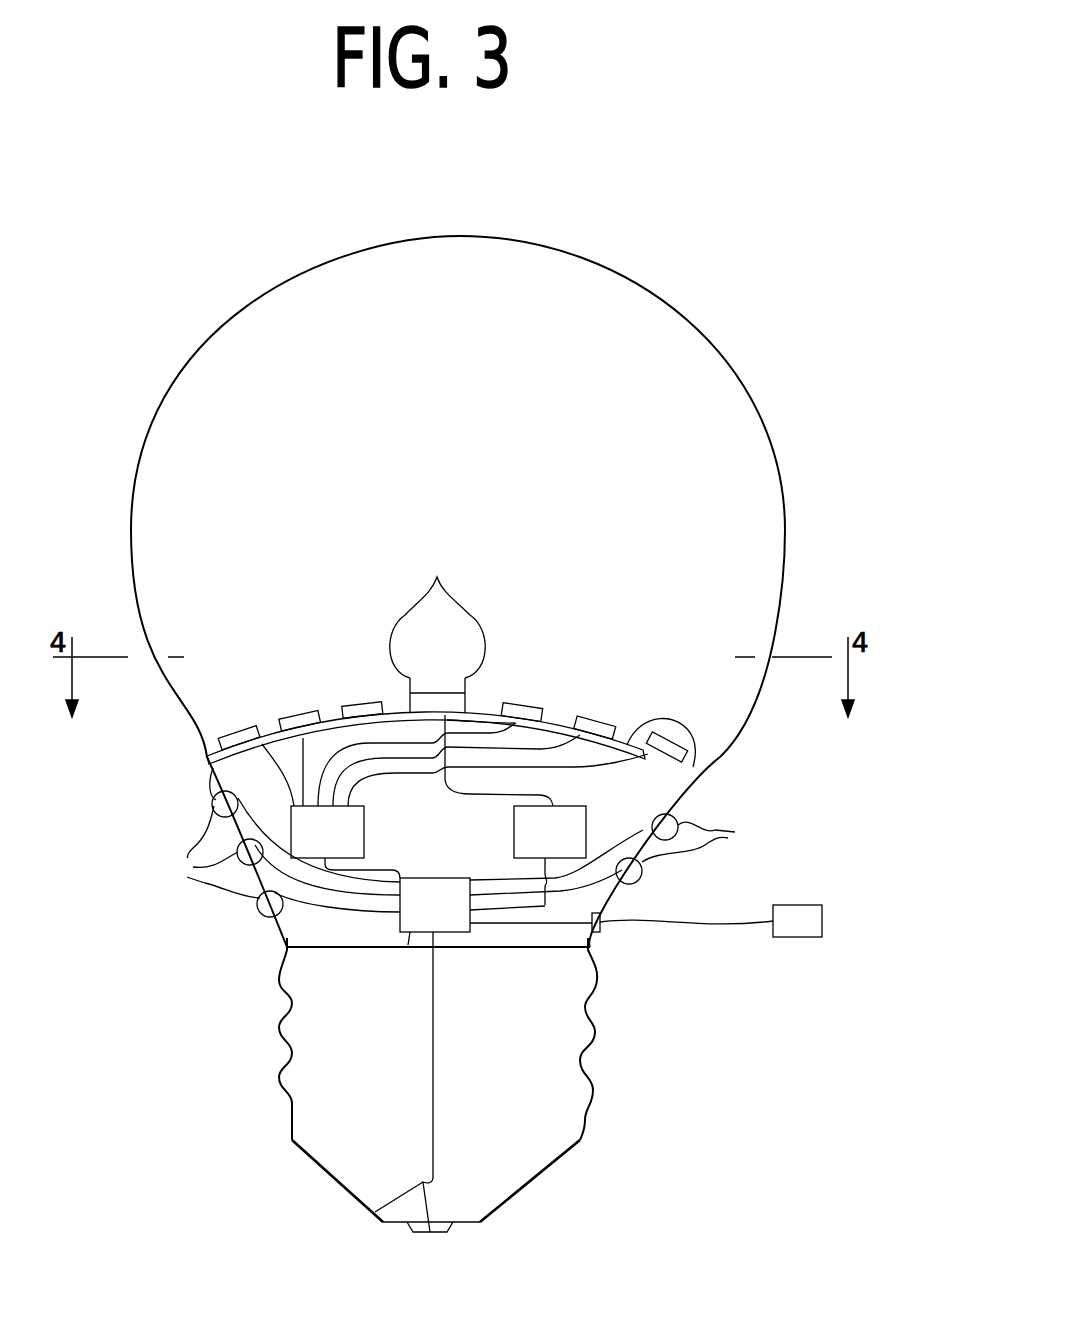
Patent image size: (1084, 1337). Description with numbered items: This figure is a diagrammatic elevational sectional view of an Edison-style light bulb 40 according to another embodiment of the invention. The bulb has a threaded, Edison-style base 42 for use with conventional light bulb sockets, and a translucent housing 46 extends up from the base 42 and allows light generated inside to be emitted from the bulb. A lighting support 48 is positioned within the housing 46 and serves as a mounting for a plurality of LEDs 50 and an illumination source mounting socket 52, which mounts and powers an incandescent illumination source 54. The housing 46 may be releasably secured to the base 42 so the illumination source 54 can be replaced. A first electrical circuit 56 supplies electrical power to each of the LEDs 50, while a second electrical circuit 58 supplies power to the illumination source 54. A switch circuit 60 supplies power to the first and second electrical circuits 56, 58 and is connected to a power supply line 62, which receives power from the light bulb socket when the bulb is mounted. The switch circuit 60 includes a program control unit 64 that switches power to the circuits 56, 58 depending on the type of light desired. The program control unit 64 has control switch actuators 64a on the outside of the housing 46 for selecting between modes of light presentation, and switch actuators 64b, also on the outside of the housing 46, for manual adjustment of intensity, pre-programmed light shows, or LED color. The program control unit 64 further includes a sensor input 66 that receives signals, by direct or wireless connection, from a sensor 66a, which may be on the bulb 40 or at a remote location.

The Edison-style light bulb 40 is at (534, 591).
The base 42 is at (592, 1024).
The translucent housing 46 is at (785, 525).
The lighting support 48 is at (205, 752).
The LEDs 50 is at (248, 724).
The illumination source mounting socket 52 is at (660, 728).
The incandescent illumination source 54 is at (467, 620).
The first electrical circuit 56 is at (353, 832).
The second electrical circuit 58 is at (578, 828).
The switch circuit 60 is at (405, 940).
The power supply line 62 is at (435, 1083).
The program control unit 64 is at (440, 893).
The control switch actuators 64a is at (698, 845).
The switch actuators 64b is at (266, 854).
The sensor input 66 is at (605, 916).
The sensor 66a is at (822, 920).